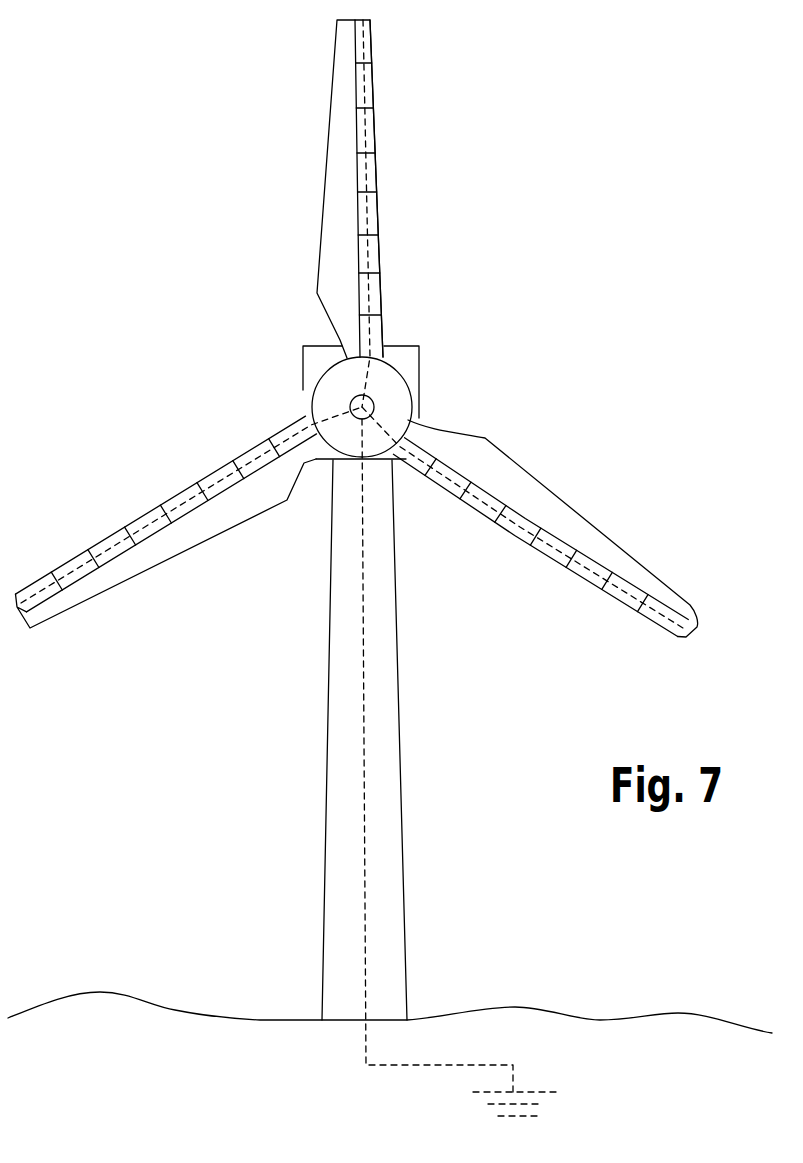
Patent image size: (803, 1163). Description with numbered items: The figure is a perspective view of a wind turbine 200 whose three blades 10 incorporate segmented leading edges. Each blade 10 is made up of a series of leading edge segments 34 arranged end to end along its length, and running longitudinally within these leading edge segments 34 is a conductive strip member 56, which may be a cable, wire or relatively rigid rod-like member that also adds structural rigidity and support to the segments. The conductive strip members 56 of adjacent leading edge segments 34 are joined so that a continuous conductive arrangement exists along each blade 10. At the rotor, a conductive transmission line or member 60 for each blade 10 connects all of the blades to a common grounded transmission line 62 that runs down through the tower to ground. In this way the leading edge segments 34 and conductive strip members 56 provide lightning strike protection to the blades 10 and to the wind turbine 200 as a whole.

The wind turbine 200 is at (596, 188).
The blade 10 is at (560, 445).
The leading edge segment 34 is at (372, 115).
The conductive strip member 56 is at (368, 213).
The conductive transmission line 60 is at (393, 377).
The grounded transmission line 62 is at (373, 762).